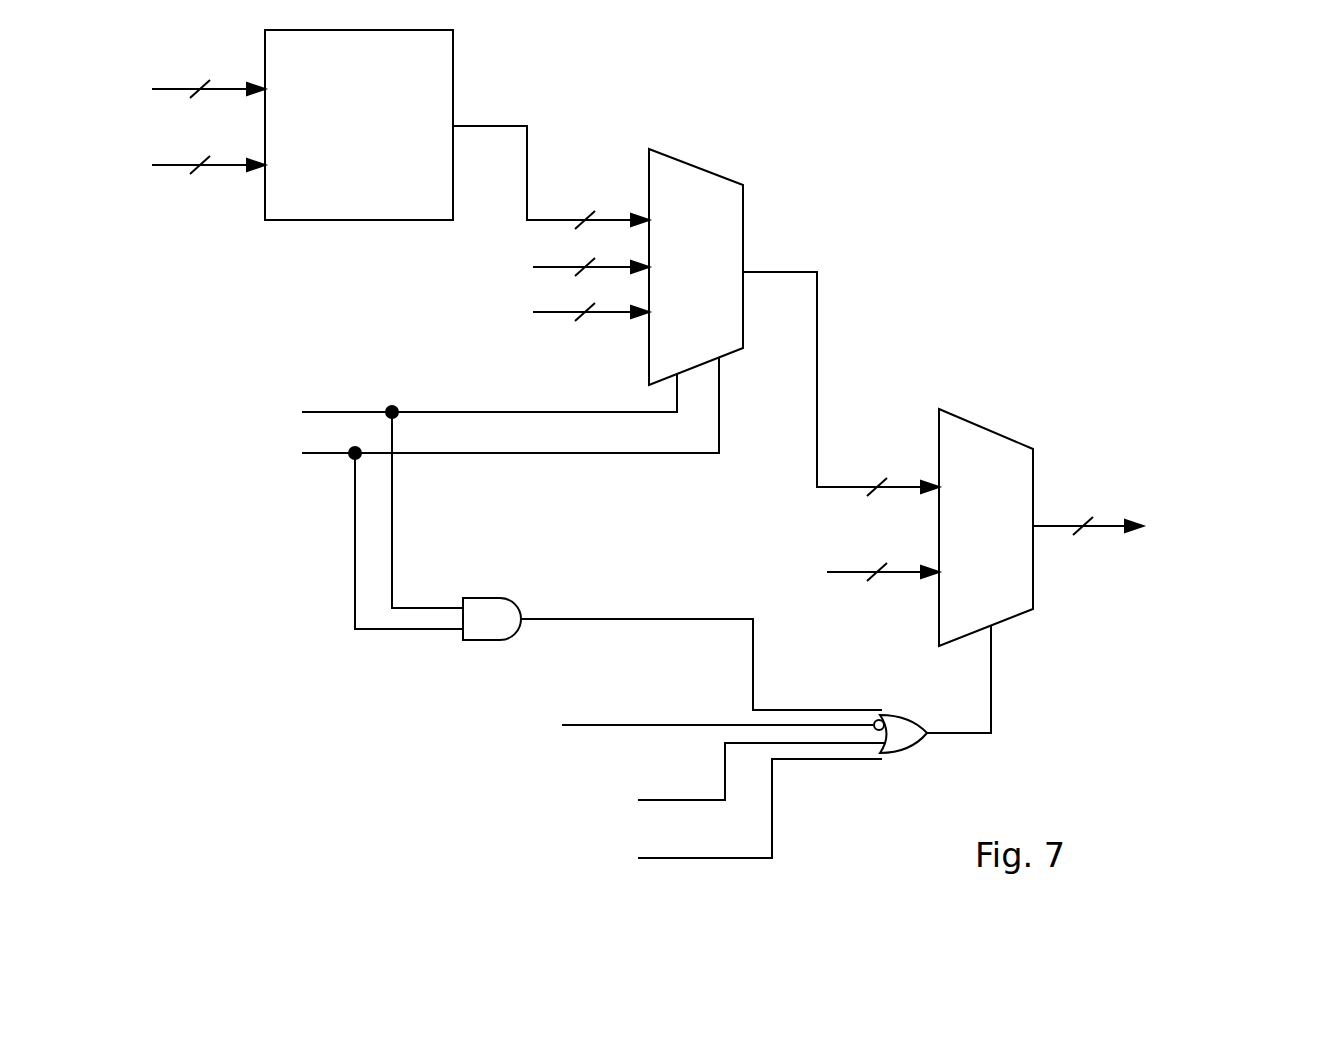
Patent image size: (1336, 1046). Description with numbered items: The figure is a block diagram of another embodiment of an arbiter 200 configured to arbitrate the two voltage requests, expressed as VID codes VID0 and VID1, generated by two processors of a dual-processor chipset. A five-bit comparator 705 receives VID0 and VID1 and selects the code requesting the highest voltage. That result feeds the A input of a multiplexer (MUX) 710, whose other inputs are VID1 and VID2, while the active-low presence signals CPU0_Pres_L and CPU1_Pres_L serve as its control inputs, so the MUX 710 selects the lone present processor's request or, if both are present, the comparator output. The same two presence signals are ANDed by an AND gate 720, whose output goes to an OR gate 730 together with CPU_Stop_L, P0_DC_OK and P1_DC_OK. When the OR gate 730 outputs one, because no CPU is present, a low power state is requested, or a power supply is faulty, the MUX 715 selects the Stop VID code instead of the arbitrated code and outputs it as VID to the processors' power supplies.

The arbiter 200 is at (705, 450).
The 5-bit comparator 705 is at (340, 166).
The multiplexer (MUX) 710 is at (678, 294).
The multiplexer (MUX) 715 is at (968, 556).
The AND gate 720 is at (505, 638).
The OR gate 730 is at (897, 752).